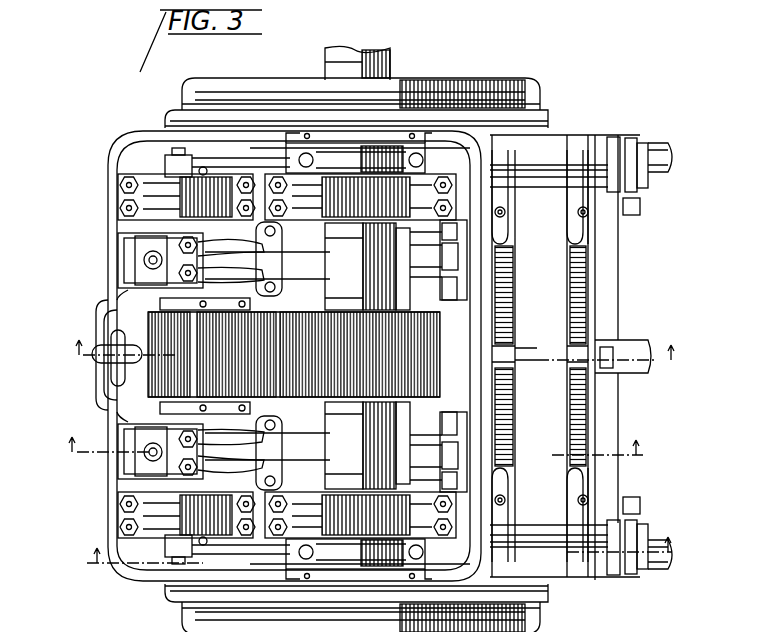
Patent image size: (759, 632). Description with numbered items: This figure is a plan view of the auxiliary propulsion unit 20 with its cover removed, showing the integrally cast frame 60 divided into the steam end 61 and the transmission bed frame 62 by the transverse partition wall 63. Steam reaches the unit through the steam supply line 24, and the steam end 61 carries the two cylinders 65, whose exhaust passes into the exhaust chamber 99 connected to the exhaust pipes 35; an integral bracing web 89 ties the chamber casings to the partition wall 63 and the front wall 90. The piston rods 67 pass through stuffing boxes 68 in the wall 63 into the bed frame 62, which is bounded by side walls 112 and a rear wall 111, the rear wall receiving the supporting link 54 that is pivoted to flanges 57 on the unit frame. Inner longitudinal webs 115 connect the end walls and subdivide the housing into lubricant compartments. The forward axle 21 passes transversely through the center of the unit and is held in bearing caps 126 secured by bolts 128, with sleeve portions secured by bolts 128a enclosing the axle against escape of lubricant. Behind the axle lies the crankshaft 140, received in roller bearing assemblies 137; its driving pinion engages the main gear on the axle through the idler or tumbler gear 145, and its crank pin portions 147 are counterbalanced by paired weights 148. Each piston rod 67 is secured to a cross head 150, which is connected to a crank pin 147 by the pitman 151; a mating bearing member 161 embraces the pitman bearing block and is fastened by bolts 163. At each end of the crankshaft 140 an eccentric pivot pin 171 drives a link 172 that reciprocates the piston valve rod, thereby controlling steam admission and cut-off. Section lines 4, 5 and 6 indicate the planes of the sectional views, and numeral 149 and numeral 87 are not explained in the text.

The auxiliary propulsion unit 20 is at (107, 144).
The roller bearing assemblies 137 is at (145, 560).
The pivot pin 171 is at (175, 560).
The side walls 112 is at (243, 585).
The link 172 is at (218, 550).
The bolts 128a is at (380, 570).
The exhaust chamber 99 is at (568, 575).
The exhaust pipes 35 is at (665, 548).
The weights 148 is at (120, 432).
The bolts 128 is at (282, 525).
The forward axle 21 is at (356, 222).
The frame 60 is at (108, 216).
The mating bearing member 161 is at (125, 484).
The rear wall 111 is at (110, 268).
The bolts 163 is at (194, 246).
The cross head 150 is at (345, 450).
The bearing caps 126 is at (333, 498).
The crank pin portions 147 is at (376, 276).
The inner webs 115 is at (322, 405).
The connecting rod or pitman 151 is at (330, 450).
The piston rods 67 is at (445, 455).
The guide rail 87 is at (560, 390).
The cylinders 65 is at (578, 412).
The partition wall 63 is at (485, 305).
The steam end 61 is at (598, 297).
The bracing web 89 is at (520, 357).
The steam supply line 24 is at (632, 345).
The link 54 is at (116, 335).
The section line 4- 4 is at (374, 358).
The flanges 57 is at (100, 378).
The main gear section 149 is at (150, 378).
The idler or tumbler gear 145 is at (205, 373).
The section line 5- 5 is at (353, 452).
The crankshaft 140 is at (178, 468).
The transmission bed frame 62 is at (117, 470).
The stuffing boxes 68 is at (468, 438).
The front wall 90 is at (590, 472).
The section line 6- 6 is at (381, 558).